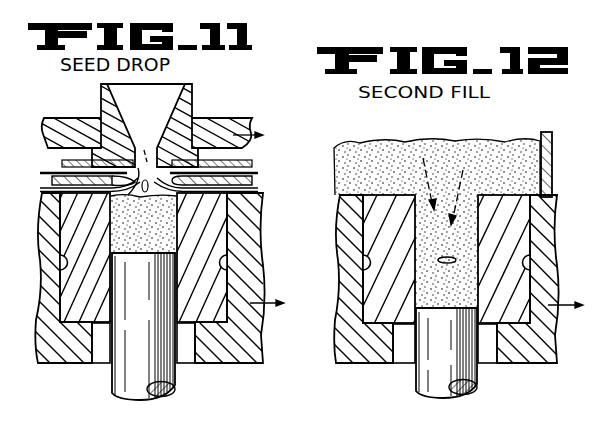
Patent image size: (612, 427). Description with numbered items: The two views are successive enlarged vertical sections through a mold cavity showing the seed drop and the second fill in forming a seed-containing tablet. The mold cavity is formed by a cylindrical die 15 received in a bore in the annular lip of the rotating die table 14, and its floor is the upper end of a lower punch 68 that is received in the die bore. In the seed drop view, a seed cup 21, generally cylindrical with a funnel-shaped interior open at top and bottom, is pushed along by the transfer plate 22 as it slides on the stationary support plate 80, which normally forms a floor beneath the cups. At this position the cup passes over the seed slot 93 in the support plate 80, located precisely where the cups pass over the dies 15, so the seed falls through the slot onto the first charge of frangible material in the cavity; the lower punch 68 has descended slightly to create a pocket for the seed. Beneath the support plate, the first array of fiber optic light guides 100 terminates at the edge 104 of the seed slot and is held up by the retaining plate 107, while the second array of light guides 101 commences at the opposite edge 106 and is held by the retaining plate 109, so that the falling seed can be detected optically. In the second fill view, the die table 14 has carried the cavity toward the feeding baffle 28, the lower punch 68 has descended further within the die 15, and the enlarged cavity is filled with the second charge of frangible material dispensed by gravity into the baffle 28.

In FIG. 11, the die table 14 is at (38, 364).
In FIG. 12, the die table 14 is at (358, 360).
In FIG. 11, the die 15 is at (228, 251).
In FIG. 12, the die 15 is at (521, 240).
In FIG. 11, the seed cup 21 is at (193, 89).
In FIG. 11, the transfer plate 22 is at (215, 118).
In FIG. 12, the feeding baffle 28 is at (553, 166).
In FIG. 11, the lower punch 68 is at (112, 386).
In FIG. 12, the lower punch 68 is at (416, 396).
In FIG. 11, the stationary support plate 80 is at (157, 163).
In FIG. 11, the seed slot 93 is at (152, 160).
In FIG. 11, the first array of fiber optic light guides 100 is at (50, 171).
In FIG. 11, the second array of fiber optic light guides 101 is at (252, 165).
In FIG. 11, the edge of the seed slot 104 is at (109, 200).
In FIG. 11, the opposite edge of the seed slot 106 is at (258, 190).
In FIG. 11, the retaining plate 107 is at (52, 180).
In FIG. 11, the retaining plate 109 is at (255, 178).